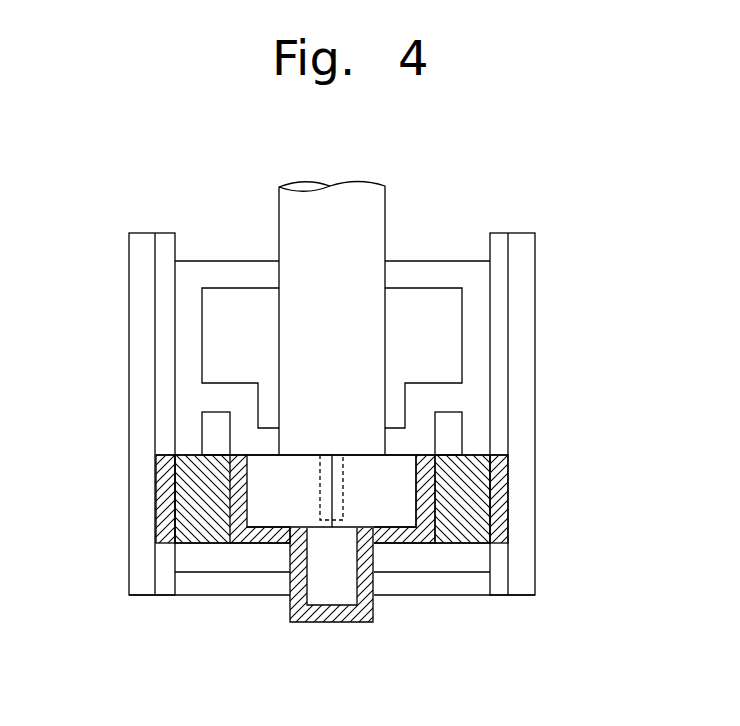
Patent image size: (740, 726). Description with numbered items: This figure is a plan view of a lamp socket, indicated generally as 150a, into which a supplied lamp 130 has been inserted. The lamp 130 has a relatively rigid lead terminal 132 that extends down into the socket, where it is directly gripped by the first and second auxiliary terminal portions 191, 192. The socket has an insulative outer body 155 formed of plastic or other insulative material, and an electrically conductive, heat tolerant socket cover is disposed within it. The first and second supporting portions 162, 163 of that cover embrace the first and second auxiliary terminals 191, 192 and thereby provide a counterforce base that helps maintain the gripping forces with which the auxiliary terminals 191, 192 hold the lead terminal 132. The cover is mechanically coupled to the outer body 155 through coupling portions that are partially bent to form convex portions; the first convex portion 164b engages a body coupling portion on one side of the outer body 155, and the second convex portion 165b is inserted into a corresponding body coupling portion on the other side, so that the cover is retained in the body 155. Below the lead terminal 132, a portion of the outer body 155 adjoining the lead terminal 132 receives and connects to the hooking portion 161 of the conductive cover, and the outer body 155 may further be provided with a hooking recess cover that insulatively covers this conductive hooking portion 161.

The lamp 130 is at (372, 223).
The lead terminal 132 is at (322, 520).
The shaft support assembly 150a is at (551, 212).
The outer body 155 is at (197, 596).
The hooking portion 161 is at (348, 622).
The first supporting portion 162 is at (237, 475).
The second supporting portion 163 is at (428, 475).
The first convex portion 164b is at (157, 525).
The second convex portion 165b is at (502, 522).
The first auxiliary terminal portion 191 is at (265, 513).
The second auxiliary terminal portion 192 is at (392, 513).